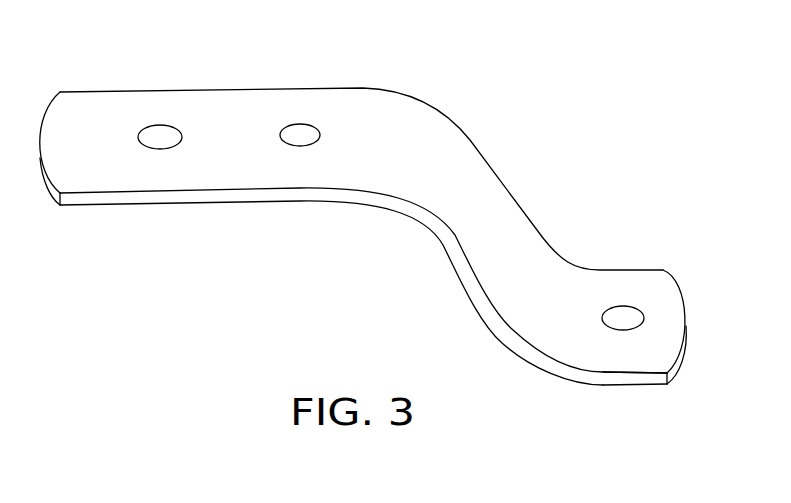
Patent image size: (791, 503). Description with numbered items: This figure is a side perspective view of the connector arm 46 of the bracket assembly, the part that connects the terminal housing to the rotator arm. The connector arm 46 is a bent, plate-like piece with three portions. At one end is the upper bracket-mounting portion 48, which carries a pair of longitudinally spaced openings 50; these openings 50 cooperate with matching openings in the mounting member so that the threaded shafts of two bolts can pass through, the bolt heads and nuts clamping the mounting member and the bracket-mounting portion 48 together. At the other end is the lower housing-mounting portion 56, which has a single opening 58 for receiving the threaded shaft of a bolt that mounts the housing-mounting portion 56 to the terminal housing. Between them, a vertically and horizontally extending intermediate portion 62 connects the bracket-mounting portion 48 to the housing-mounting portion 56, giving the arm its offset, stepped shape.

The connector arm 46 is at (388, 234).
The bracket-mounting portion 48 is at (272, 88).
The openings 50 is at (295, 135).
The housing-mounting portion 56 is at (600, 385).
The opening 58 is at (633, 316).
The intermediate portion 62 is at (483, 290).